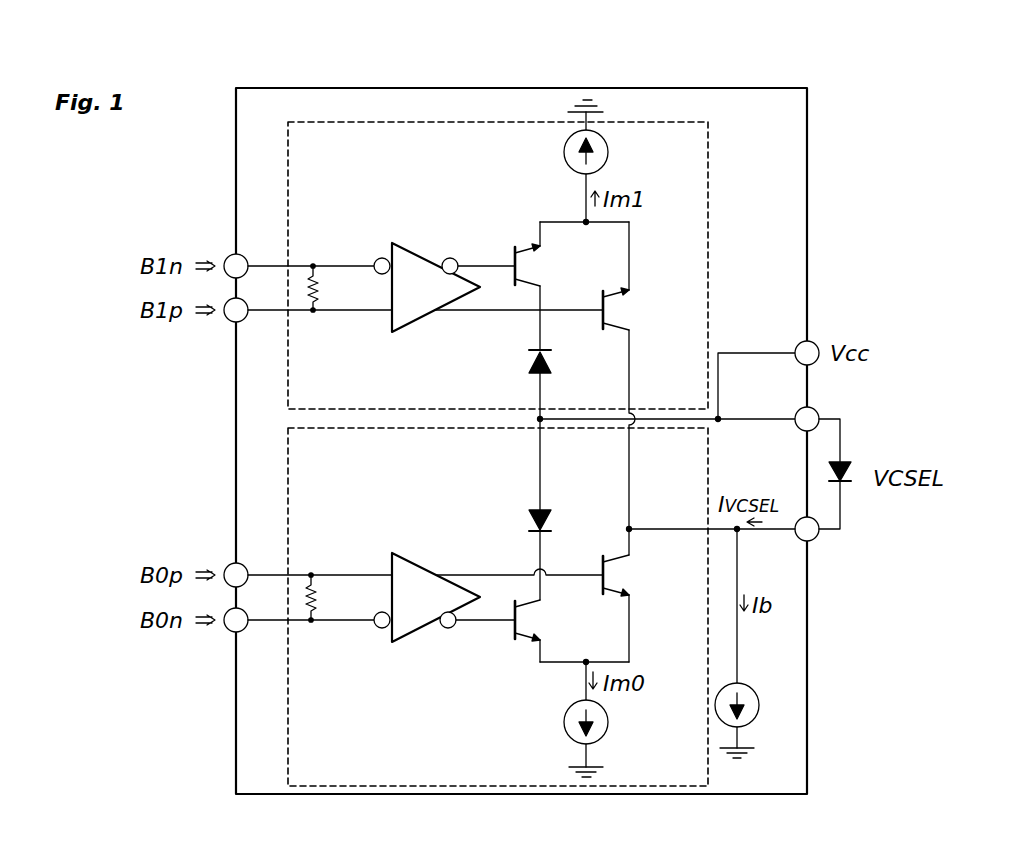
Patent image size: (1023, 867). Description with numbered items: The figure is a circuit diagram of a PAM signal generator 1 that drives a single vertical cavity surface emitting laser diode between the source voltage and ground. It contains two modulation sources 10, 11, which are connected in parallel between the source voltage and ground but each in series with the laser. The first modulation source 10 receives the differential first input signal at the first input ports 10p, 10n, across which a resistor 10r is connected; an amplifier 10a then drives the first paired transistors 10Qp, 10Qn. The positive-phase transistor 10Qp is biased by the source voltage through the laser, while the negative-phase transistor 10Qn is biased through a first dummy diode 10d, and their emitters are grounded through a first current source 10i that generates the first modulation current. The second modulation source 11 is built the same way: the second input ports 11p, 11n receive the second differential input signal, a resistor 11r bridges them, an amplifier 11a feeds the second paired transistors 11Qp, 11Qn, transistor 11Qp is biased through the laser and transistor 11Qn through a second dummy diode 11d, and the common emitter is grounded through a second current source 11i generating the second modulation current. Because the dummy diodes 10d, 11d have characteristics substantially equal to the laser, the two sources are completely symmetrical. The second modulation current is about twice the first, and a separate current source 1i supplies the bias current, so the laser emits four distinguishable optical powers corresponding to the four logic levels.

The PAM signal generator 1 is at (872, 118).
The first modulation source 10 is at (288, 468).
The second modulation source 11 is at (288, 394).
The amplifier 10a is at (418, 575).
The amplifier 11a is at (422, 267).
The resistor 10r is at (322, 597).
The resistor 11r is at (327, 292).
The first dummy diode 10d is at (530, 520).
The second dummy diode 11d is at (520, 368).
The first current source 10i is at (563, 728).
The second current source 11i is at (610, 155).
The transistor 10Qn is at (510, 632).
The transistor 10Qp is at (618, 573).
The transistor 11Qn is at (535, 268).
The transistor 11Qp is at (617, 313).
The first input port 10p is at (226, 565).
The first input port 10n is at (227, 632).
The second input port 11p is at (227, 322).
The second input port 11n is at (227, 258).
The current source 1i is at (755, 693).